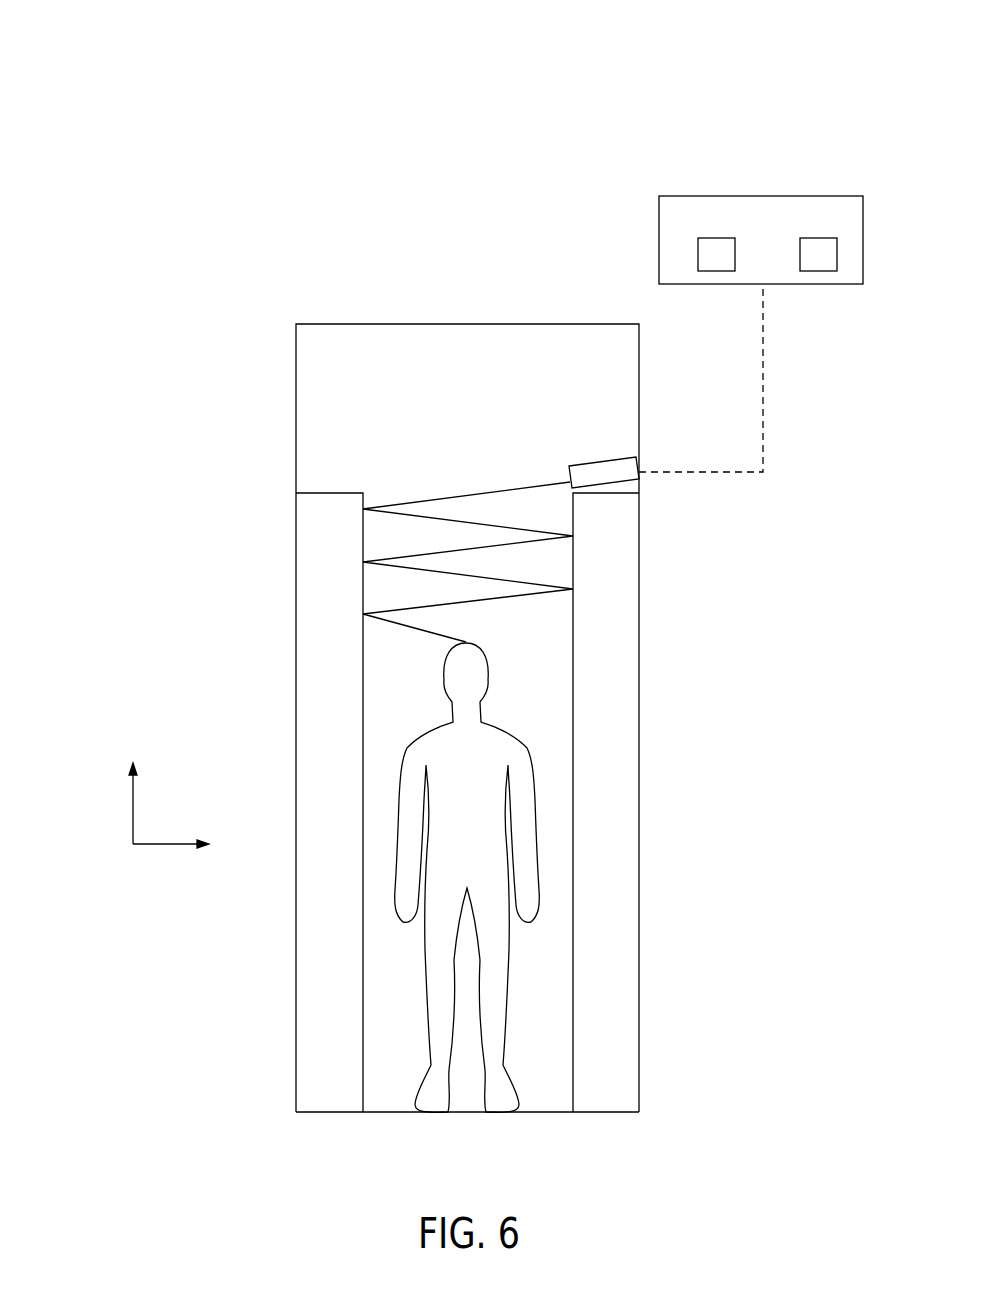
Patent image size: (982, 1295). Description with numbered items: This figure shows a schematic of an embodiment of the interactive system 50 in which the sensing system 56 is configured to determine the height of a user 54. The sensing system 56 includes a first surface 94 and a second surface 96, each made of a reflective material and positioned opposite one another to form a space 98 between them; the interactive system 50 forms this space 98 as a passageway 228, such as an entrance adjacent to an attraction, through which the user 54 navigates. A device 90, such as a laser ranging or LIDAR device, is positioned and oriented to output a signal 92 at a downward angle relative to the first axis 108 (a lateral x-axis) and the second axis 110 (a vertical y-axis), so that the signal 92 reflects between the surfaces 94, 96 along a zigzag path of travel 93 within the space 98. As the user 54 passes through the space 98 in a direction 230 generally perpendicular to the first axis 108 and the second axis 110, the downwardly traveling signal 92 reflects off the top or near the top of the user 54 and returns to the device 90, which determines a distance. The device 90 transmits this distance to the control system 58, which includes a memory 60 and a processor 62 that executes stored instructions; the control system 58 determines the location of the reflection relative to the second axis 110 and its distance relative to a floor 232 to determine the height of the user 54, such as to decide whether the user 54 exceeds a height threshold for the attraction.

The interactive system 50 is at (828, 68).
The user 54 is at (492, 672).
The sensing system 56 is at (325, 1124).
The control system 58 is at (763, 195).
The memory 60 is at (715, 272).
The processor 62 is at (812, 272).
The device 90 is at (603, 460).
The signal 92 is at (518, 485).
The path of travel 93 is at (423, 462).
The first surface 94 is at (296, 627).
The second surface 96 is at (639, 627).
The space 98 is at (551, 1098).
The first axis 108 is at (165, 845).
The second axis 110 is at (133, 810).
The passageway 228 is at (296, 410).
The direction 230 is at (220, 1030).
The floor 232 is at (468, 1113).